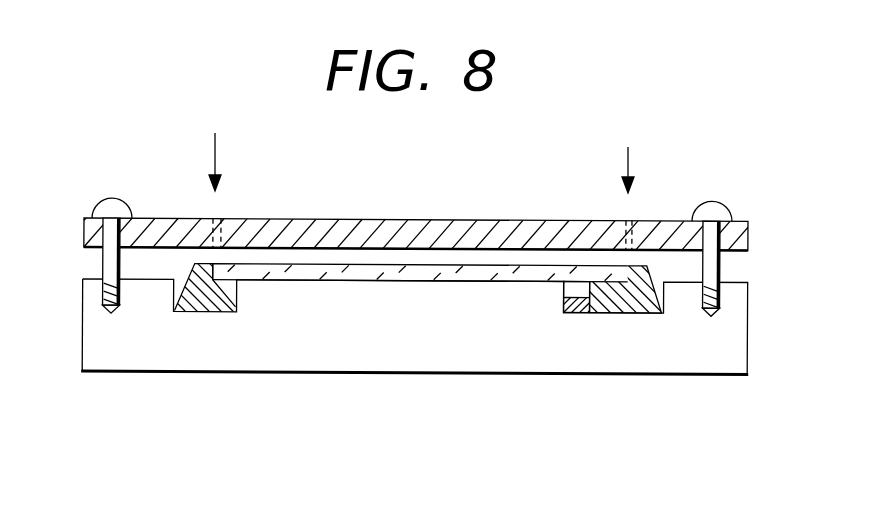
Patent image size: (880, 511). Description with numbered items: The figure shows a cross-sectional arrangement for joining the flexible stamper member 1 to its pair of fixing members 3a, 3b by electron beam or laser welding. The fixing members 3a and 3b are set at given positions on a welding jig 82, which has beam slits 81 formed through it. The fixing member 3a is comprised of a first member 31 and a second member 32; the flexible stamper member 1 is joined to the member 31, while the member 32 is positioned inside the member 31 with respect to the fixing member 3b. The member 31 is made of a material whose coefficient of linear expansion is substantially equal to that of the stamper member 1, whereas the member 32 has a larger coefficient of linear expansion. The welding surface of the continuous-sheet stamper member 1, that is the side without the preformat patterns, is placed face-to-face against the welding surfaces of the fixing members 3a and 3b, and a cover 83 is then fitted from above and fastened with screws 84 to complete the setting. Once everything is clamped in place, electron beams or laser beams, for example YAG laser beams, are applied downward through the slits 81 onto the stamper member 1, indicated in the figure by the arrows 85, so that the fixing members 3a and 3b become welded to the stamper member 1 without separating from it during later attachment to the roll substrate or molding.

The flexible stamper member 1 is at (409, 280).
The fixing member 3a is at (626, 374).
The fixing member 3b is at (197, 312).
The first member 31 is at (640, 313).
The second member 32 is at (572, 313).
The beam slits 81 is at (214, 218).
The welding jig 82 is at (716, 362).
The cover 83 is at (535, 218).
The screws 84 is at (113, 206).
The pressing direction arrow 85 is at (217, 133).